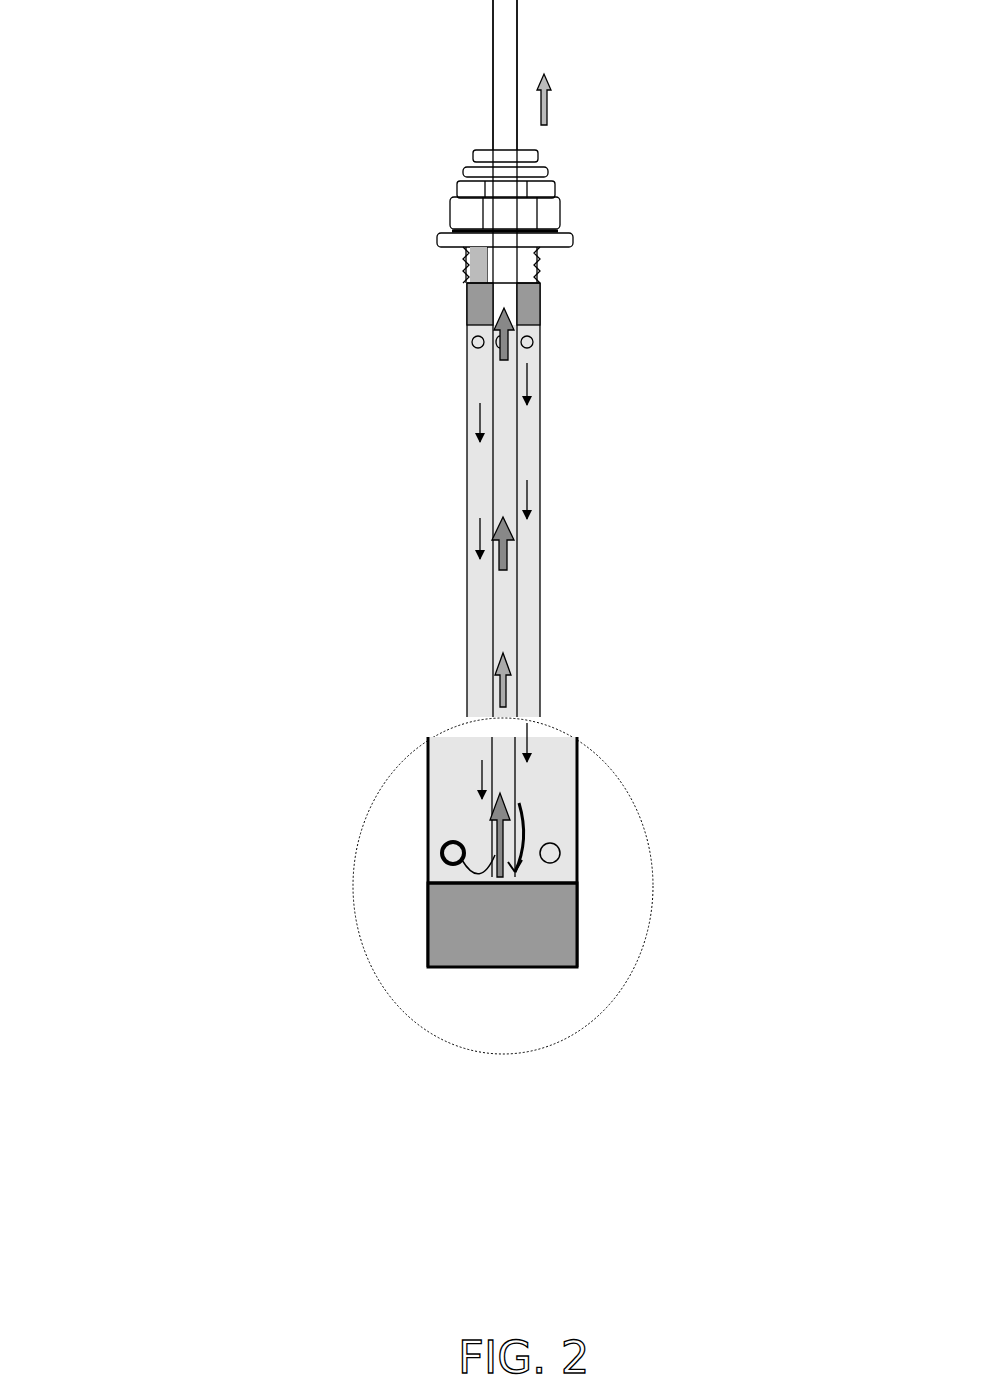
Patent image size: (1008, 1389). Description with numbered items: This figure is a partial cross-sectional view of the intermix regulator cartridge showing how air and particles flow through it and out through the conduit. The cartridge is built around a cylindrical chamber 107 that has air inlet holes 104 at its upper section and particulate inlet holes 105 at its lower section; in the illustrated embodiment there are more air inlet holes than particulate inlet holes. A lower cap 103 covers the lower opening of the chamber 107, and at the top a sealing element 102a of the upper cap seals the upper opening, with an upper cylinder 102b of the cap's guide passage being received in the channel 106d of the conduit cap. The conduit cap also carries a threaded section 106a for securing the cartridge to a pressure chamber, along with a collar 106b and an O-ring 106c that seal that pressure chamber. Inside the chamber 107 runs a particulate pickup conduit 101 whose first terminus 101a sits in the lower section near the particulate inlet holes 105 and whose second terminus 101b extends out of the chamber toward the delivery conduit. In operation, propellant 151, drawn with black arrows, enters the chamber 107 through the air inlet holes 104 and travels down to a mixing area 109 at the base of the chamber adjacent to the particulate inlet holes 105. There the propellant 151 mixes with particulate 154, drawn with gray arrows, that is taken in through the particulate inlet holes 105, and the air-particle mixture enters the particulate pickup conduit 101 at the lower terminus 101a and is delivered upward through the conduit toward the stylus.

The particulate pickup conduit 101 is at (517, 604).
The first terminus 101a is at (513, 878).
The second terminus 101b is at (517, 3).
The sealing element 102a is at (540, 310).
The upper cylinder 102b is at (468, 272).
The lower cap 103 is at (438, 967).
The air inlet holes 104 is at (476, 348).
The particulate inlet holes 105 is at (440, 862).
The threaded section 106a is at (540, 262).
The collar 106b is at (573, 237).
The O-ring 106c is at (452, 229).
The channel 106d is at (457, 186).
The chamber 107 is at (552, 431).
The mixing area 109 is at (507, 883).
The propellant 151 is at (415, 338).
The particulate 154 is at (392, 845).